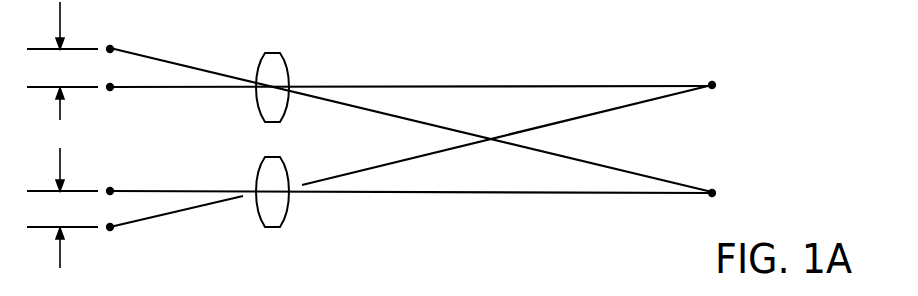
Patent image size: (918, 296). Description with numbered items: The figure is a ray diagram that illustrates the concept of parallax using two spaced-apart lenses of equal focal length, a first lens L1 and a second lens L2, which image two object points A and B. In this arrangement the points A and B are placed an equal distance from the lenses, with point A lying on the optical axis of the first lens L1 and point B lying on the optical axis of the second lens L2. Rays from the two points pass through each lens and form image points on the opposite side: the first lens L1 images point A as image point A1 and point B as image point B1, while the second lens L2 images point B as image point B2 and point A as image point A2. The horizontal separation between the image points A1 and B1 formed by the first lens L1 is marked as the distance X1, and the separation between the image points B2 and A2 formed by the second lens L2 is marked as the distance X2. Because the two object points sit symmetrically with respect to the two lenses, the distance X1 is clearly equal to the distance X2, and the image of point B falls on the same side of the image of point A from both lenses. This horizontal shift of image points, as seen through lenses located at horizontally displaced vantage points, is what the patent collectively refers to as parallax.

The image of point B through lens L1 B1 is at (139, 3).
The image of point A through lens L1 A1 is at (141, 96).
The image separation x1 X1 is at (67, 61).
The first lens L1 is at (293, 87).
The second lens L2 is at (289, 189).
The image of point B through lens L2 B2 is at (139, 148).
The image of point A through lens L2 A2 is at (141, 237).
The image separation x2 X2 is at (67, 208).
The object point A is at (721, 100).
The object point B is at (722, 205).